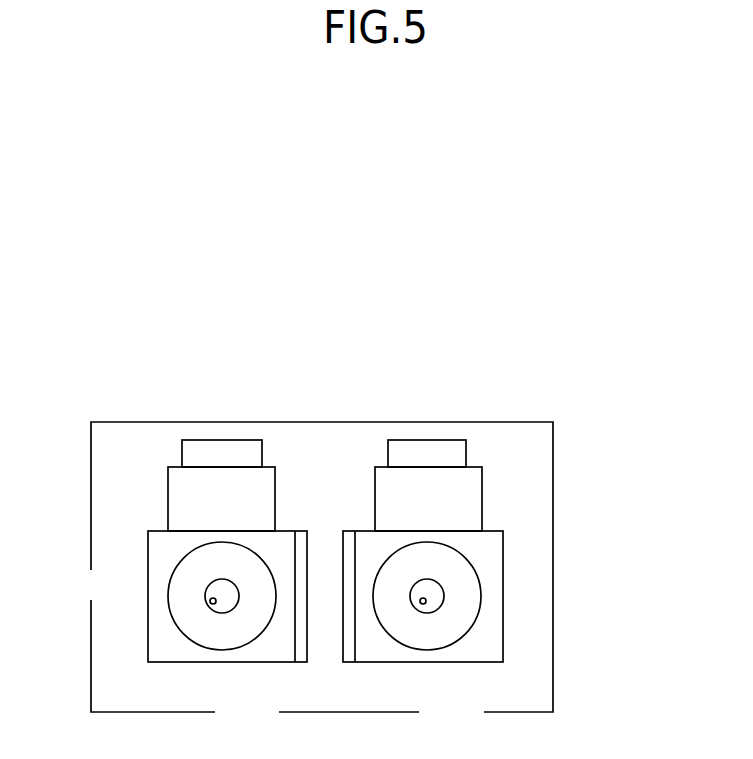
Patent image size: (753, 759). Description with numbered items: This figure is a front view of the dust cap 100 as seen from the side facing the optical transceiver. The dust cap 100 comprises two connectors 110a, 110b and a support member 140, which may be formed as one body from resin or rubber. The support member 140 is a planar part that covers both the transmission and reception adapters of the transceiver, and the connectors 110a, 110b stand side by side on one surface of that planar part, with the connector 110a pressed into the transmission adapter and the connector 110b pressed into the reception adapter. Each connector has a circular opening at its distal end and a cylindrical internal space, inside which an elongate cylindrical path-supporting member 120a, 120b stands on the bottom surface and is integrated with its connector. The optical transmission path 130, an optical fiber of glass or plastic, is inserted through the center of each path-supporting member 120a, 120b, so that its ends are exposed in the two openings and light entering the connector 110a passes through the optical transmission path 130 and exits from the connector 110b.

The dust cap 100 is at (592, 340).
The connector 110a is at (227, 490).
The connector 110b is at (422, 493).
The path-supporting member 120a is at (225, 607).
The path-supporting member 120b is at (430, 607).
The optical transmission path 130 is at (208, 601).
The support member 140 is at (554, 683).